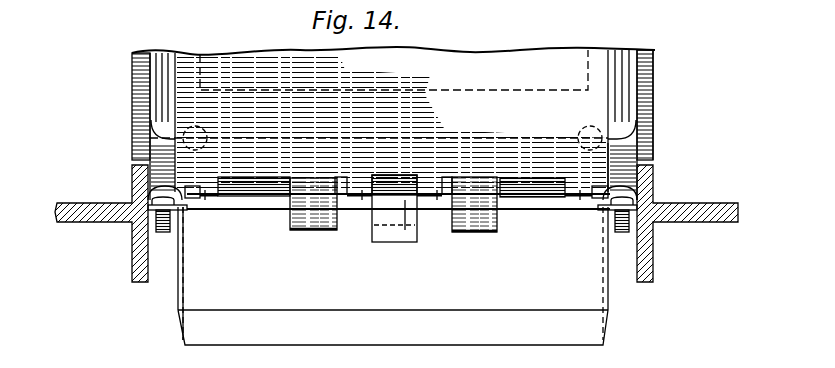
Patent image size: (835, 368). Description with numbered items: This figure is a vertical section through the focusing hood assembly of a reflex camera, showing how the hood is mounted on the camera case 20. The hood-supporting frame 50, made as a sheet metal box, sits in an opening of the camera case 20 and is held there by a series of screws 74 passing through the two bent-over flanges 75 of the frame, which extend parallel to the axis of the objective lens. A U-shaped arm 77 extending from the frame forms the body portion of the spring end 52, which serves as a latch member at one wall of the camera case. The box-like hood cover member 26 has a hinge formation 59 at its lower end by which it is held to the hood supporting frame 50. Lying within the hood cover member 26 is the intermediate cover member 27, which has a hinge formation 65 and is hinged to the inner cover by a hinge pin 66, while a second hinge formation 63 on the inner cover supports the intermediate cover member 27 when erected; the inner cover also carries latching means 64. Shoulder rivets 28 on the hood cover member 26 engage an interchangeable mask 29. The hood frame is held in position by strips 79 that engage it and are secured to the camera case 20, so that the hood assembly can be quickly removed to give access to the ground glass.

The camera case 20 is at (727, 205).
The hood cover member 26 is at (655, 76).
The intermediate cover member 27 is at (600, 57).
The shoulder rivets 28 is at (183, 137).
The mask 29 is at (630, 123).
The hood-supporting frame 50 is at (592, 300).
The spring end 52 is at (397, 238).
The hinge formation 59 is at (155, 193).
The second hinge formation 63 is at (261, 188).
The latching means 64 is at (303, 228).
The hinge formation 65 is at (204, 196).
The hinge pin 66 is at (345, 196).
The screws 74 is at (166, 232).
The bent-over flanges 75 is at (150, 227).
The U-shaped arm 77 is at (413, 213).
The strips 79 is at (185, 200).